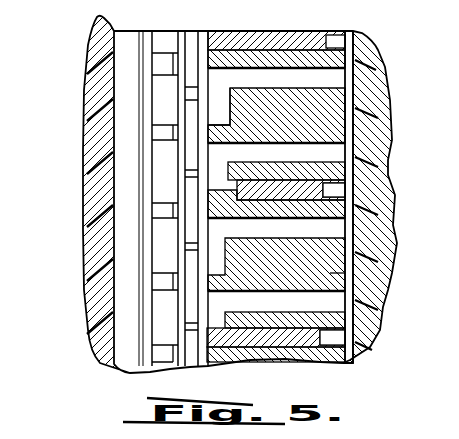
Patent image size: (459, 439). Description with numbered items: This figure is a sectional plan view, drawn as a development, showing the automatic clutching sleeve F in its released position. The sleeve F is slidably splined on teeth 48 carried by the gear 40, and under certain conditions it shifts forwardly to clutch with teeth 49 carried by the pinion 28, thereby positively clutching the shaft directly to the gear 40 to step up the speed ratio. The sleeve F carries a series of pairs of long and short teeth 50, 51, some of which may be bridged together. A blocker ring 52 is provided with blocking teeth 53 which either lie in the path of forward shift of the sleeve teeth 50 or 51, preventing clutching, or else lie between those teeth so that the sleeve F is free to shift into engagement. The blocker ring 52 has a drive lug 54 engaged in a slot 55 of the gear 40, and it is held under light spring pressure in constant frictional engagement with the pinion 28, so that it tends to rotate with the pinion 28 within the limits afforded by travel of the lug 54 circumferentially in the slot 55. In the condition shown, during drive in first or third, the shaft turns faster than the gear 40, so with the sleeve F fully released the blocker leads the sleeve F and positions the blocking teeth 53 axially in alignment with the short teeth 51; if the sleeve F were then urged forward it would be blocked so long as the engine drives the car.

The pinion 28 is at (189, 169).
The gear 40 is at (373, 111).
The teeth 48 is at (295, 33).
The teeth 49 is at (162, 62).
The long teeth 50 is at (240, 118).
The short teeth 51 is at (243, 104).
The blocker ring 52 is at (199, 30).
The blocking teeth 53 is at (203, 88).
The drive lug 54 is at (272, 147).
The slot 55 is at (217, 167).
The automatic clutching sleeve F is at (330, 273).